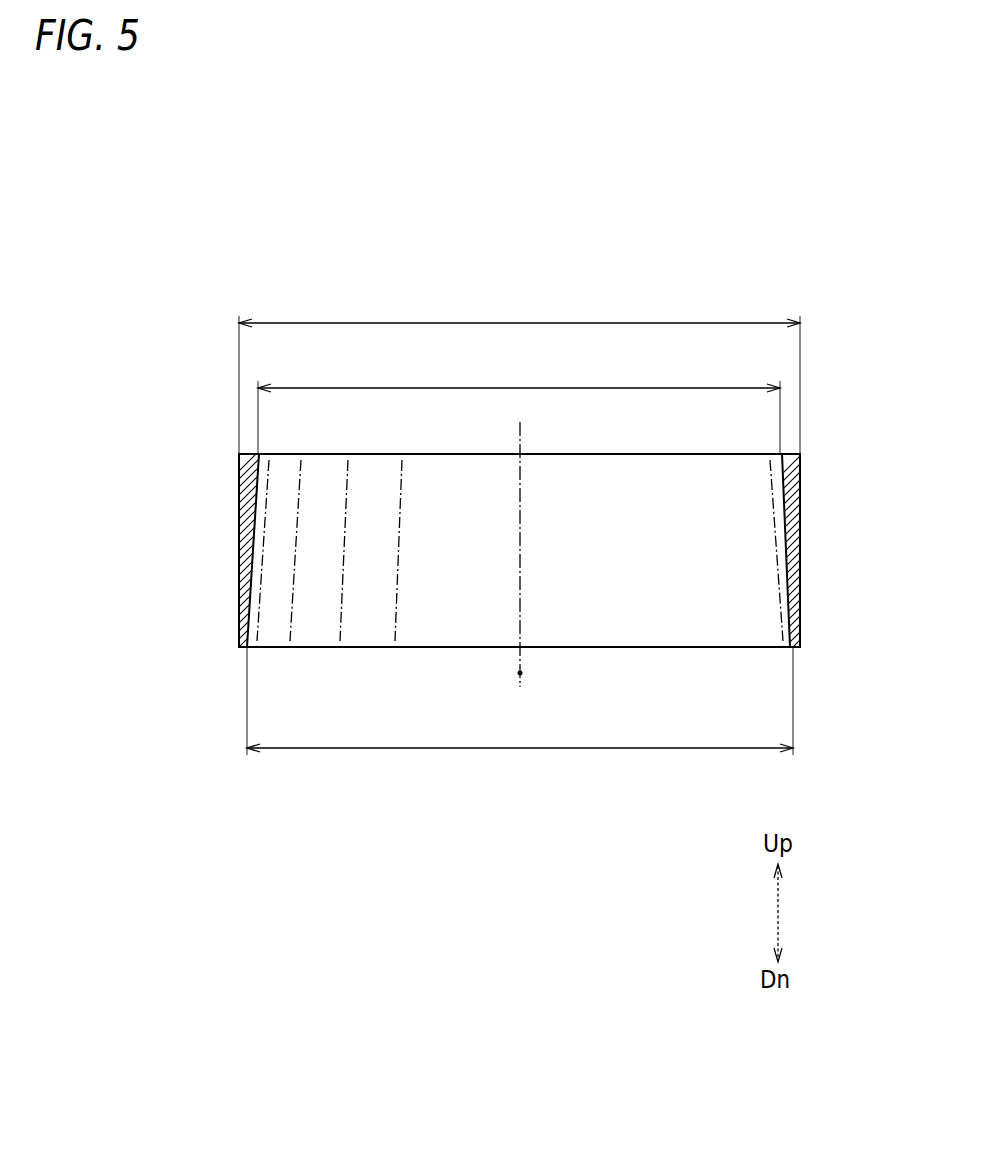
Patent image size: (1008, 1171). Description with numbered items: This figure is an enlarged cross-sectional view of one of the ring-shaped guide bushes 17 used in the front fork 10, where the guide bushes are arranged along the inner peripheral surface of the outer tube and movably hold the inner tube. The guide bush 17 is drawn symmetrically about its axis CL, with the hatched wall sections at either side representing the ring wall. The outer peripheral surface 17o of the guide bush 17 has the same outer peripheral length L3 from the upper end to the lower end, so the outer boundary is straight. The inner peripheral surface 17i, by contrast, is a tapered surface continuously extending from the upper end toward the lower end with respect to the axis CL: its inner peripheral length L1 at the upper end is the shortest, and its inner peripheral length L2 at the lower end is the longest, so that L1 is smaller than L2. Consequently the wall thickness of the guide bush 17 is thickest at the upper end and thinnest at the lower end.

The front fork 10 is at (506, 416).
The guide bush 17 is at (506, 564).
The outer peripheral surface 17o is at (239, 553).
The inner peripheral surface 17i is at (790, 583).
The axis CL is at (530, 673).
The inner peripheral length on the upper end L1 is at (519, 407).
The inner peripheral length on the lower end L2 is at (520, 701).
The outer peripheral length L3 is at (519, 375).